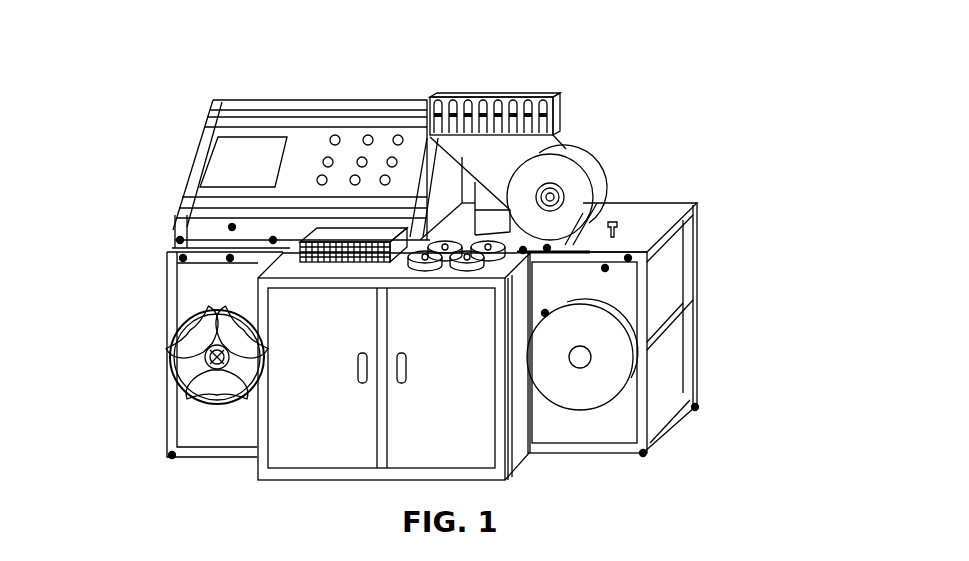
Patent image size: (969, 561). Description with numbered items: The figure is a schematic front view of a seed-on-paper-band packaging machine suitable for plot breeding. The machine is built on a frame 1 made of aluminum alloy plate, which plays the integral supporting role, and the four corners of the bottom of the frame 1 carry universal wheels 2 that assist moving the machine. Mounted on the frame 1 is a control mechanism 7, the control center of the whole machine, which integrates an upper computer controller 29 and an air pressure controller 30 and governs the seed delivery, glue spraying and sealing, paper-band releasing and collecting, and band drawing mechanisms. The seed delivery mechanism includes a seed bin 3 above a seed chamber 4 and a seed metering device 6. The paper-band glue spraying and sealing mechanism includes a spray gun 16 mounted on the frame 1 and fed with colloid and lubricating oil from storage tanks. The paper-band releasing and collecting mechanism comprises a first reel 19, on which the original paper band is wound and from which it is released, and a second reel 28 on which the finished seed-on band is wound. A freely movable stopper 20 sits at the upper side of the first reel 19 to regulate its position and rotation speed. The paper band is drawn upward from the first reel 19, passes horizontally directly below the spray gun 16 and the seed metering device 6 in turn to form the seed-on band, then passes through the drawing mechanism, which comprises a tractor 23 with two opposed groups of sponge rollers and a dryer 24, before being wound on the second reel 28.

The frame 1 is at (210, 420).
The universal wheels 2 is at (695, 407).
The seed bin 3 is at (487, 98).
The seed chamber 4 is at (477, 152).
The seed metering device 6 is at (583, 163).
The control mechanism 7 is at (200, 177).
The spray gun 16 is at (620, 225).
The first reel 19 is at (607, 357).
The stopper 20 is at (545, 313).
The tractor 23 is at (347, 163).
The dryer 24 is at (320, 237).
The second reel 28 is at (193, 347).
The upper computer controller 29 is at (235, 163).
The air pressure controller 30 is at (411, 233).